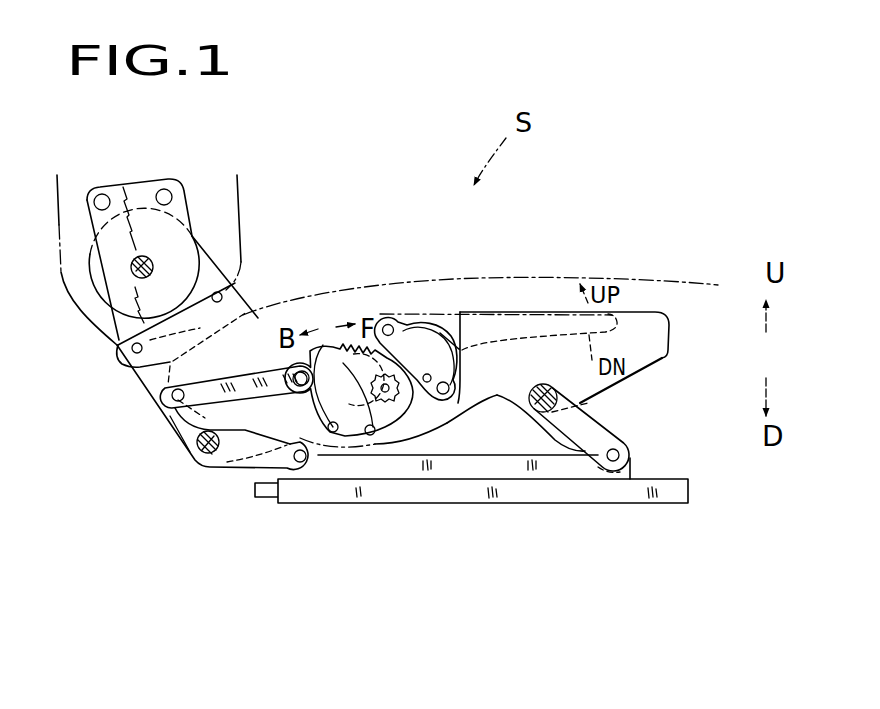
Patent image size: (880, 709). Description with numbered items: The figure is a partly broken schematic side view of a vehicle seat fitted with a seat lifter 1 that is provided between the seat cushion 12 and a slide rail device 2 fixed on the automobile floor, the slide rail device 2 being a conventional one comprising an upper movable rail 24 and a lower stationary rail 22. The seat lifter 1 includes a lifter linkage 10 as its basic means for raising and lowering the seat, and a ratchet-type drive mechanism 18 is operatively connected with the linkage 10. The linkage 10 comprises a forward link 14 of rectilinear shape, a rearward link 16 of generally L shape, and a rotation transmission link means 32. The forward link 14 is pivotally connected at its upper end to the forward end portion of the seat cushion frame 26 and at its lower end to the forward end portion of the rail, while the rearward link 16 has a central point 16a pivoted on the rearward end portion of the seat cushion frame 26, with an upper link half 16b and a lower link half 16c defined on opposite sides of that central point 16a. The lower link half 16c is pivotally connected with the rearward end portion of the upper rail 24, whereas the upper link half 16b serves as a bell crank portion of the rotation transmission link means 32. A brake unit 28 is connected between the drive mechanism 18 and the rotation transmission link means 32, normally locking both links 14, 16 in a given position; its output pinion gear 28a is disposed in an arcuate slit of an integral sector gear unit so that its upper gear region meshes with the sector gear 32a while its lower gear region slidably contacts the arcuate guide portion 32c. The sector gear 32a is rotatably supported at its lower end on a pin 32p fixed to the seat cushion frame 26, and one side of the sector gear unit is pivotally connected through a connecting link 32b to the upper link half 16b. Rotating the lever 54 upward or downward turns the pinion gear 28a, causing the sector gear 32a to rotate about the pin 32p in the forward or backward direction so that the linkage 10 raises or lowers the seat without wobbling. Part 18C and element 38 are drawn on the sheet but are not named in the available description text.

The seat lifter 1 is at (471, 566).
The slide rail device 2 is at (471, 539).
The lifter linkage 10 is at (178, 457).
The seat cushion 12 is at (291, 268).
The forward link 14 is at (588, 422).
The rearward link 16 is at (180, 457).
The central point 16a is at (187, 448).
The upper link half 16b is at (168, 426).
The lower link half 16c is at (230, 462).
The ratchet-type drive mechanism 18 is at (410, 310).
The cushion frame bracket 18C is at (532, 316).
The lever 54 is at (452, 313).
The lower stationary rail 22 is at (526, 502).
The upper movable rail 24 is at (581, 481).
The seat cushion frame 26 is at (670, 355).
The brake unit 28 is at (415, 420).
The output pinion gear 28a is at (458, 393).
The rotation transmission link means 32 is at (317, 486).
The sector gear 32a is at (323, 377).
The connecting link 32b is at (247, 320).
The arcuate guide portion 32c is at (350, 380).
The pin 32p is at (345, 377).
The operation lever 38 is at (429, 332).